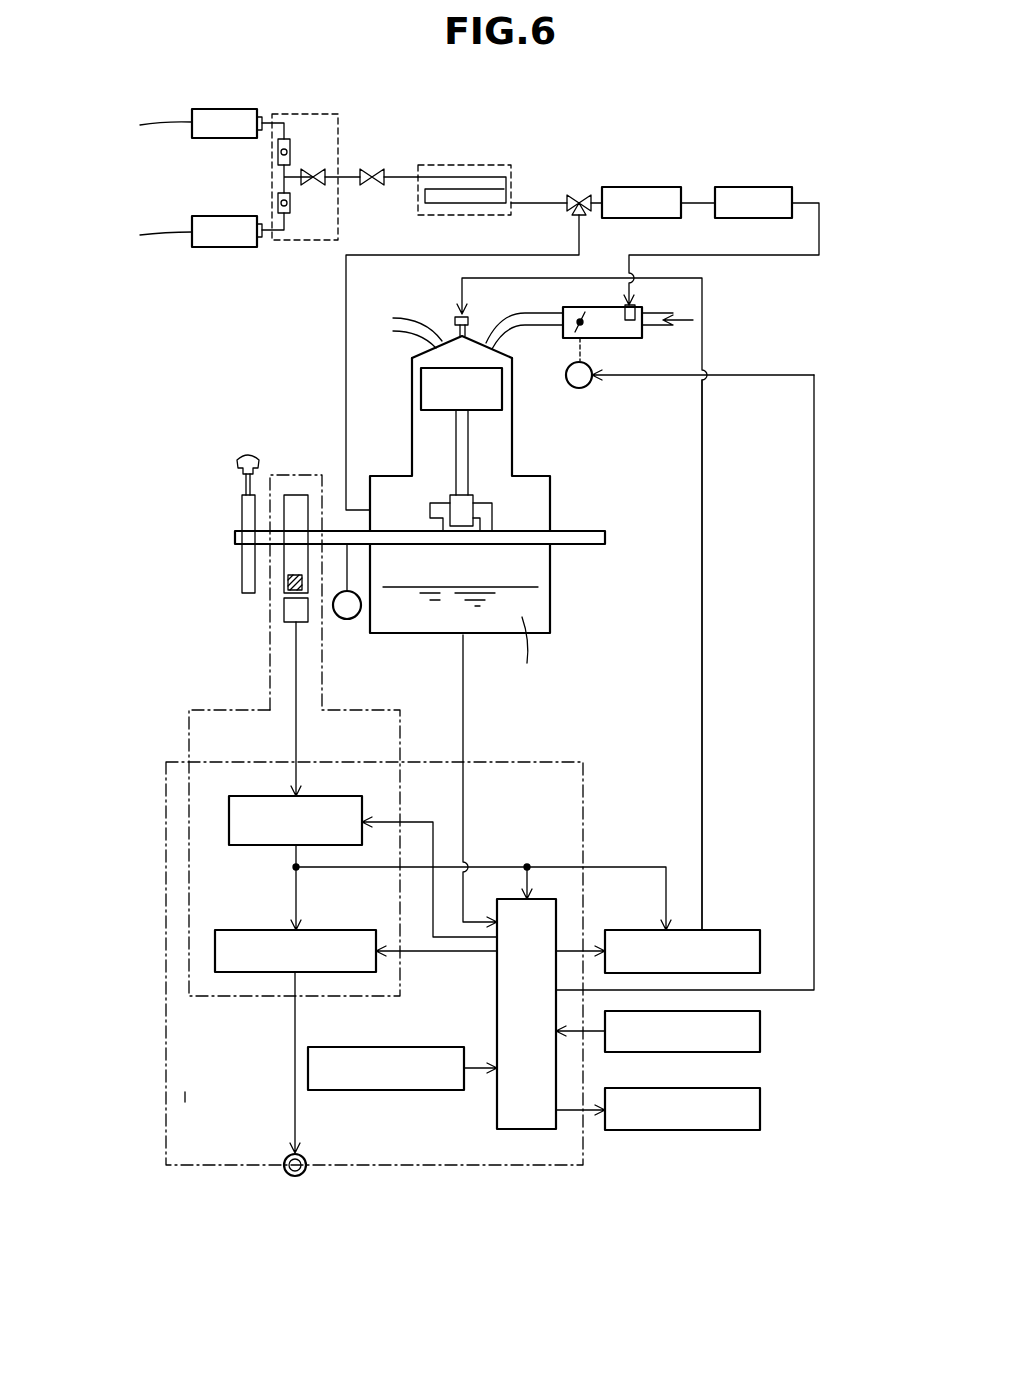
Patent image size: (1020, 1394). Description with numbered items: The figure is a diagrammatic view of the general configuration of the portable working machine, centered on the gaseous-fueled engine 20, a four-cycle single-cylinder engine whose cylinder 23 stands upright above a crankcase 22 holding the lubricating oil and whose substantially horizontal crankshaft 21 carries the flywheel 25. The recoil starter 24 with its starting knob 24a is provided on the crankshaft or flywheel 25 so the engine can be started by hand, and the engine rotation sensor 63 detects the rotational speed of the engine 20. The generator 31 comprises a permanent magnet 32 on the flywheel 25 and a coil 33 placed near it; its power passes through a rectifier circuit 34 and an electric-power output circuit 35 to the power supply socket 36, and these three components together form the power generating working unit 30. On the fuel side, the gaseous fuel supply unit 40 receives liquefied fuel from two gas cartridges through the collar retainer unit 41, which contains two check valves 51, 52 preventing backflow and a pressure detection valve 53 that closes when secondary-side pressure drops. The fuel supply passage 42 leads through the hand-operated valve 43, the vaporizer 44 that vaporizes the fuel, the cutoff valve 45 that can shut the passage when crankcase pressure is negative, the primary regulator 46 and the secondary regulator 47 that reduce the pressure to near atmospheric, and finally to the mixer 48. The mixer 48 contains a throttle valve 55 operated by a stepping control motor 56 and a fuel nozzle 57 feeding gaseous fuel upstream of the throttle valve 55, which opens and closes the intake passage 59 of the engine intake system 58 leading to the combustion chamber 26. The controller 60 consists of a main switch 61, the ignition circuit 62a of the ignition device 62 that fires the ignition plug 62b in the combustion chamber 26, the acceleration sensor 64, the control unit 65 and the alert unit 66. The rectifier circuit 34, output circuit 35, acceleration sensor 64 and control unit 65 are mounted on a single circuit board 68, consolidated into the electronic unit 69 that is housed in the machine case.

The gaseous-fueled engine 20 is at (563, 493).
The crankshaft 21 is at (580, 545).
The crankcase 22 is at (553, 612).
The cylinder 23 is at (413, 440).
The recoil starter 24 is at (250, 512).
The starting knob 24a is at (240, 462).
The flywheel 25 is at (293, 500).
The combustion chamber 26 is at (445, 358).
The power generating working unit 30 is at (178, 743).
The generator 31 is at (150, 600).
The permanent magnet 32 is at (288, 585).
The coil 33 is at (288, 612).
The rectifier circuit 34 is at (229, 825).
The electric-power output circuit 35 is at (215, 955).
The power supply socket 36 is at (291, 1178).
The gaseous fuel supply unit 40 is at (264, 100).
The collar retainer unit 41 is at (285, 112).
The fuel supply passage 42 is at (356, 176).
The hand-operated valve 43 is at (378, 172).
The vaporizer 44 is at (452, 163).
The cutoff valve 45 is at (580, 195).
The primary regulator 46 is at (640, 195).
The secondary regulator 47 is at (755, 195).
The mixer 48 is at (641, 335).
The check valve 51 is at (291, 150).
The check valve 52 is at (292, 210).
The pressure detection valve 53 is at (318, 170).
The throttle valve 55 is at (567, 328).
The control motor 56 is at (580, 388).
The fuel nozzle 57 is at (630, 322).
The engine intake system 58 is at (677, 299).
The intake passage 59 is at (505, 330).
The controller 60 is at (606, 1159).
The main switch 61 is at (760, 1032).
The ignition device 62 is at (776, 945).
The ignition circuit 62a is at (735, 930).
The ignition plug 62b is at (455, 320).
The engine rotation sensor 63 is at (352, 612).
The acceleration sensor 64 is at (385, 1090).
The control unit 65 is at (530, 1130).
The alert unit 66 is at (760, 1110).
The circuit board 68 is at (185, 1097).
The electronic unit 69 is at (158, 1020).